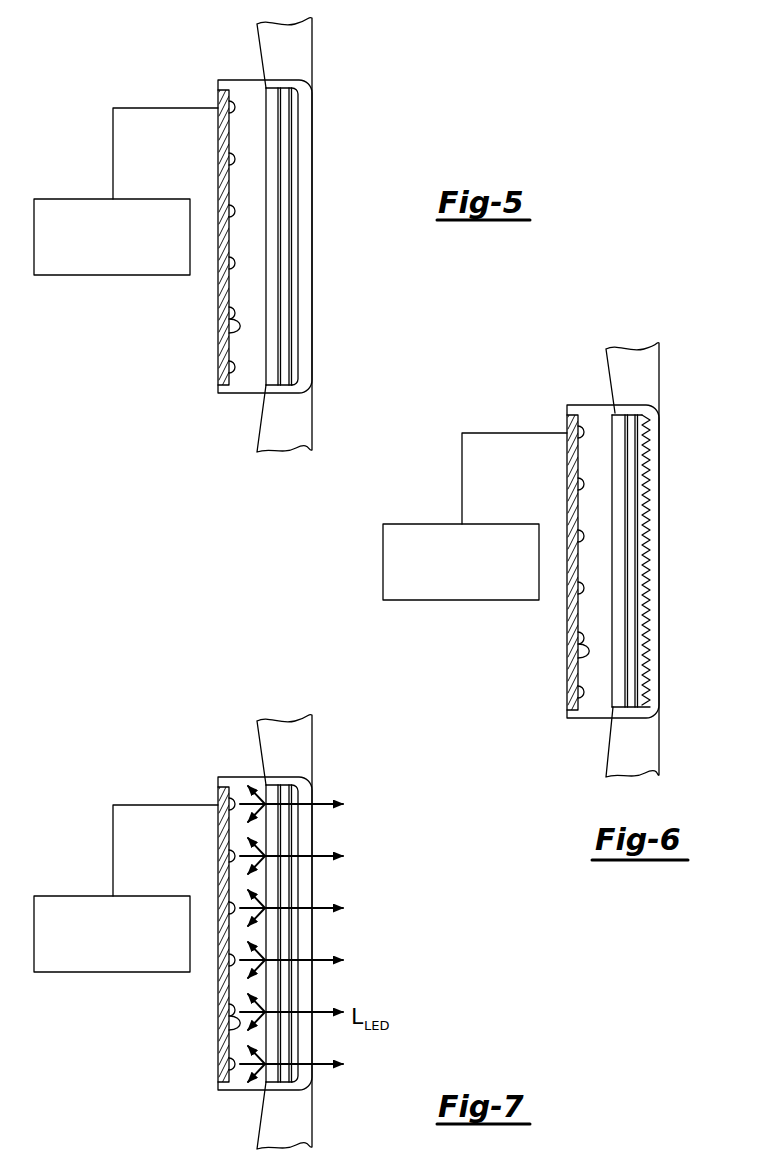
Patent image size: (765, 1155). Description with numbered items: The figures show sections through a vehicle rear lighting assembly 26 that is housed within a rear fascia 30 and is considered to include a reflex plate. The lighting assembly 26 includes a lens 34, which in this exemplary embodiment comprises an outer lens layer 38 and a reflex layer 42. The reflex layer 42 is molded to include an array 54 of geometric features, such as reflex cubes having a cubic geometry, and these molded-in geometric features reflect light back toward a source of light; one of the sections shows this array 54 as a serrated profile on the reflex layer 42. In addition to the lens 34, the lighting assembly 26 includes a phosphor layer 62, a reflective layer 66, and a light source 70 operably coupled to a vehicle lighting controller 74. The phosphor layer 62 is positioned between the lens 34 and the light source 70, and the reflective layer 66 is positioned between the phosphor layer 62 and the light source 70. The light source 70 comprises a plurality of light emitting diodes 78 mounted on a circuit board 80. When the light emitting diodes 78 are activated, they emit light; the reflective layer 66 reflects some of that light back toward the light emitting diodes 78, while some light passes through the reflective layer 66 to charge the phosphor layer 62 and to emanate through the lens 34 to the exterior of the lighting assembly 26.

In FIG. 5, the lighting assembly 26 is at (364, 82).
In FIG. 6, the lighting assembly 26 is at (666, 535).
In FIG. 7, the lighting assembly 26 is at (318, 907).
In FIG. 5, the rear fascia 30 is at (268, 52).
In FIG. 6, the rear fascia 30 is at (602, 559).
In FIG. 7, the rear fascia 30 is at (254, 931).
In FIG. 5, the lens 34 is at (308, 113).
In FIG. 6, the lens 34 is at (667, 437).
In FIG. 7, the lens 34 is at (320, 933).
In FIG. 5, the outer lens layer 38 is at (305, 212).
In FIG. 6, the outer lens layer 38 is at (673, 561).
In FIG. 7, the outer lens layer 38 is at (329, 933).
In FIG. 5, the reflex layer 42 is at (292, 257).
In FIG. 6, the reflex layer 42 is at (669, 561).
In FIG. 7, the reflex layer 42 is at (322, 933).
In FIG. 6, the array of geometric features 54 is at (677, 560).
In FIG. 5, the phosphor layer 62 is at (282, 358).
In FIG. 6, the phosphor layer 62 is at (656, 694).
In FIG. 7, the phosphor layer 62 is at (315, 1079).
In FIG. 5, the reflective layer 66 is at (268, 375).
In FIG. 6, the reflective layer 66 is at (579, 587).
In FIG. 7, the reflective layer 66 is at (231, 958).
In FIG. 5, the light source 70 is at (226, 380).
In FIG. 6, the light source 70 is at (539, 569).
In FIG. 7, the light source 70 is at (190, 941).
In FIG. 5, the vehicle lighting controller 74 is at (72, 199).
In FIG. 6, the vehicle lighting controller 74 is at (456, 538).
In FIG. 7, the vehicle lighting controller 74 is at (107, 910).
In FIG. 5, the light emitting diodes 78 is at (236, 330).
In FIG. 6, the light emitting diodes 78 is at (556, 562).
In FIG. 7, the light emitting diodes 78 is at (207, 934).
In FIG. 5, the circuit board 80 is at (230, 243).
In FIG. 6, the circuit board 80 is at (520, 537).
In FIG. 7, the circuit board 80 is at (171, 909).